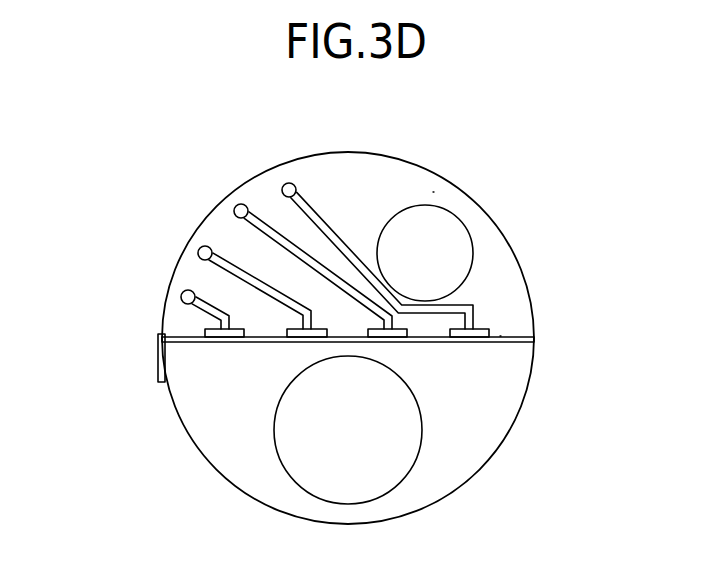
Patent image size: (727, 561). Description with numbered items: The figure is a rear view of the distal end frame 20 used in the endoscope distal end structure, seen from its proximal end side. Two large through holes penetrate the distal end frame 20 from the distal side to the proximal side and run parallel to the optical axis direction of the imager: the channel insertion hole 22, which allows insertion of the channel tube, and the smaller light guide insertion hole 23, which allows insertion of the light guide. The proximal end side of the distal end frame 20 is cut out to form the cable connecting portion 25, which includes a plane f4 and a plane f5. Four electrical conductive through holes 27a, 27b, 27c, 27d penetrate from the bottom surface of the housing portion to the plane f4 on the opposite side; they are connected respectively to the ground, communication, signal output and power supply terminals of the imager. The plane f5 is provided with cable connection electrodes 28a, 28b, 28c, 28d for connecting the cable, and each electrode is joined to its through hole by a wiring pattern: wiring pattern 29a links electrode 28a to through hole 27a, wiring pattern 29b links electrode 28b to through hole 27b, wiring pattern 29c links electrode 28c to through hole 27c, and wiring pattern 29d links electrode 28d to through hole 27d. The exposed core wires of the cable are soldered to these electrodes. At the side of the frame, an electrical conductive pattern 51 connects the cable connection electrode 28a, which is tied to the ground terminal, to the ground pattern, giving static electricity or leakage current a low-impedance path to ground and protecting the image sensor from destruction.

The distal end frame 20 is at (400, 157).
The channel insertion hole 22 is at (398, 433).
The light guide insertion hole 23 is at (452, 248).
The cable connecting portion 25 is at (514, 337).
The electrical conductive pattern 51 is at (158, 354).
The electrical conductive through hole 27a is at (181, 297).
The electrical conductive through hole 27b is at (199, 251).
The electrical conductive through hole 27c is at (234, 207).
The electrical conductive through hole 27d is at (283, 185).
The cable connection electrode 28a is at (227, 342).
The cable connection electrode 28b is at (308, 342).
The cable connection electrode 28c is at (388, 342).
The cable connection electrode 28d is at (468, 342).
The wiring pattern 29a is at (220, 310).
The wiring pattern 29b is at (240, 278).
The wiring pattern 29c is at (267, 240).
The wiring pattern 29d is at (318, 215).
The plane f4 is at (433, 192).
The plane f5 is at (500, 336).